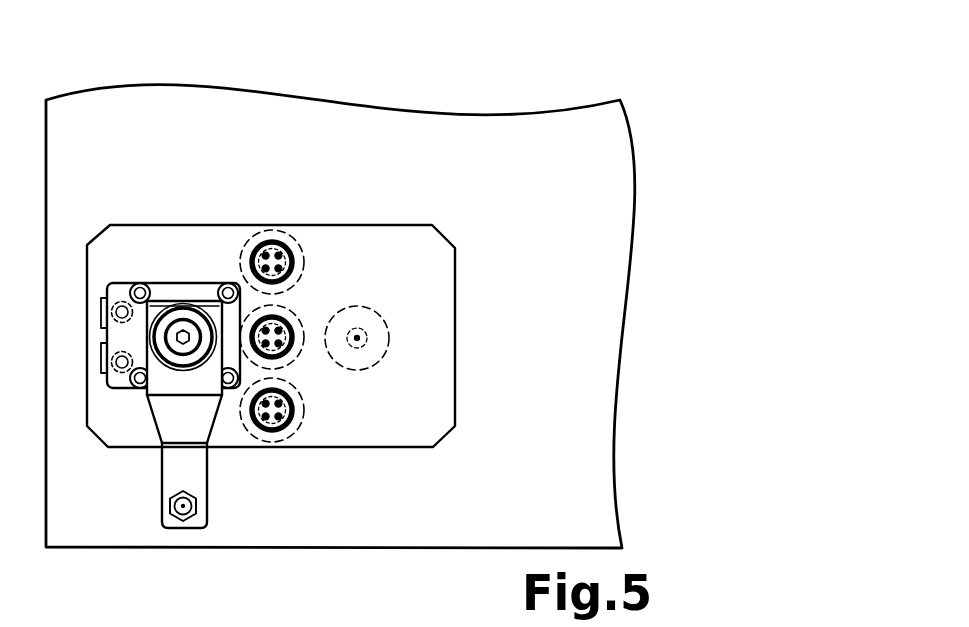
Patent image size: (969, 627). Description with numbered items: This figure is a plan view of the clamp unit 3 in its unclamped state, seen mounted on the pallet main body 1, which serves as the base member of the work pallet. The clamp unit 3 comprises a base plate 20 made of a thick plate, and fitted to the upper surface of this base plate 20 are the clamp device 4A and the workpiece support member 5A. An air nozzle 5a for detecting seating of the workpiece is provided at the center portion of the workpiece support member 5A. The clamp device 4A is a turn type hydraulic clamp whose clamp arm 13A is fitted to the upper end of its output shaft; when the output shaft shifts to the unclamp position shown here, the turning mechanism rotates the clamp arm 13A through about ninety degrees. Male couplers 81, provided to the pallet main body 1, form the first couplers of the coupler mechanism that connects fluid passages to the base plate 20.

The pallet main body 1 is at (502, 163).
The clamp unit 3 is at (280, 461).
The base plate 20 is at (455, 296).
The male coupler 81 is at (302, 255).
The workpiece support member 5A is at (375, 311).
The air nozzle 5a is at (359, 338).
The clamp device 4A is at (181, 277).
The clamp arm 13A is at (162, 488).